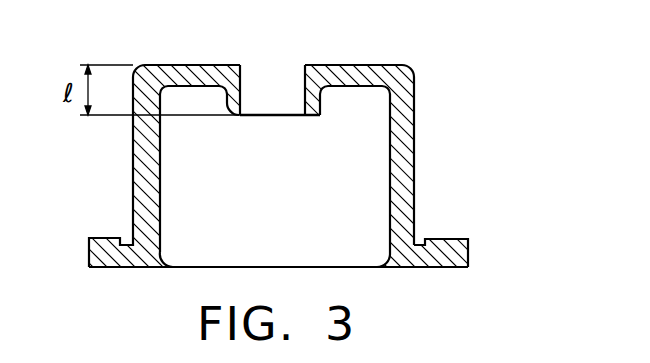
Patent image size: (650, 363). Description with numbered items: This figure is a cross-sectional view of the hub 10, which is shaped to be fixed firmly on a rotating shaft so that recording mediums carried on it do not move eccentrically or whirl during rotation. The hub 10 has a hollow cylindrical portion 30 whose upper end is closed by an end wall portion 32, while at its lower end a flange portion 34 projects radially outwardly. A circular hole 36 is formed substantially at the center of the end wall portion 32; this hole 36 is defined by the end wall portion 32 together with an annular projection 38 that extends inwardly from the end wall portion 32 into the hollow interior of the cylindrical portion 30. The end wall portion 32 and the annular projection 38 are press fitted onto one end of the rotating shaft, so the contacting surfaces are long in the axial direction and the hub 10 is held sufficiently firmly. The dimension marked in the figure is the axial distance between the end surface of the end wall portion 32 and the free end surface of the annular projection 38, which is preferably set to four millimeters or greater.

The hub 10 is at (420, 116).
The cylindrical portion 30 is at (402, 195).
The end wall portion 32 is at (367, 70).
The flange portion 34 is at (460, 249).
The circular hole 36 is at (250, 117).
The annular projection 38 is at (321, 105).